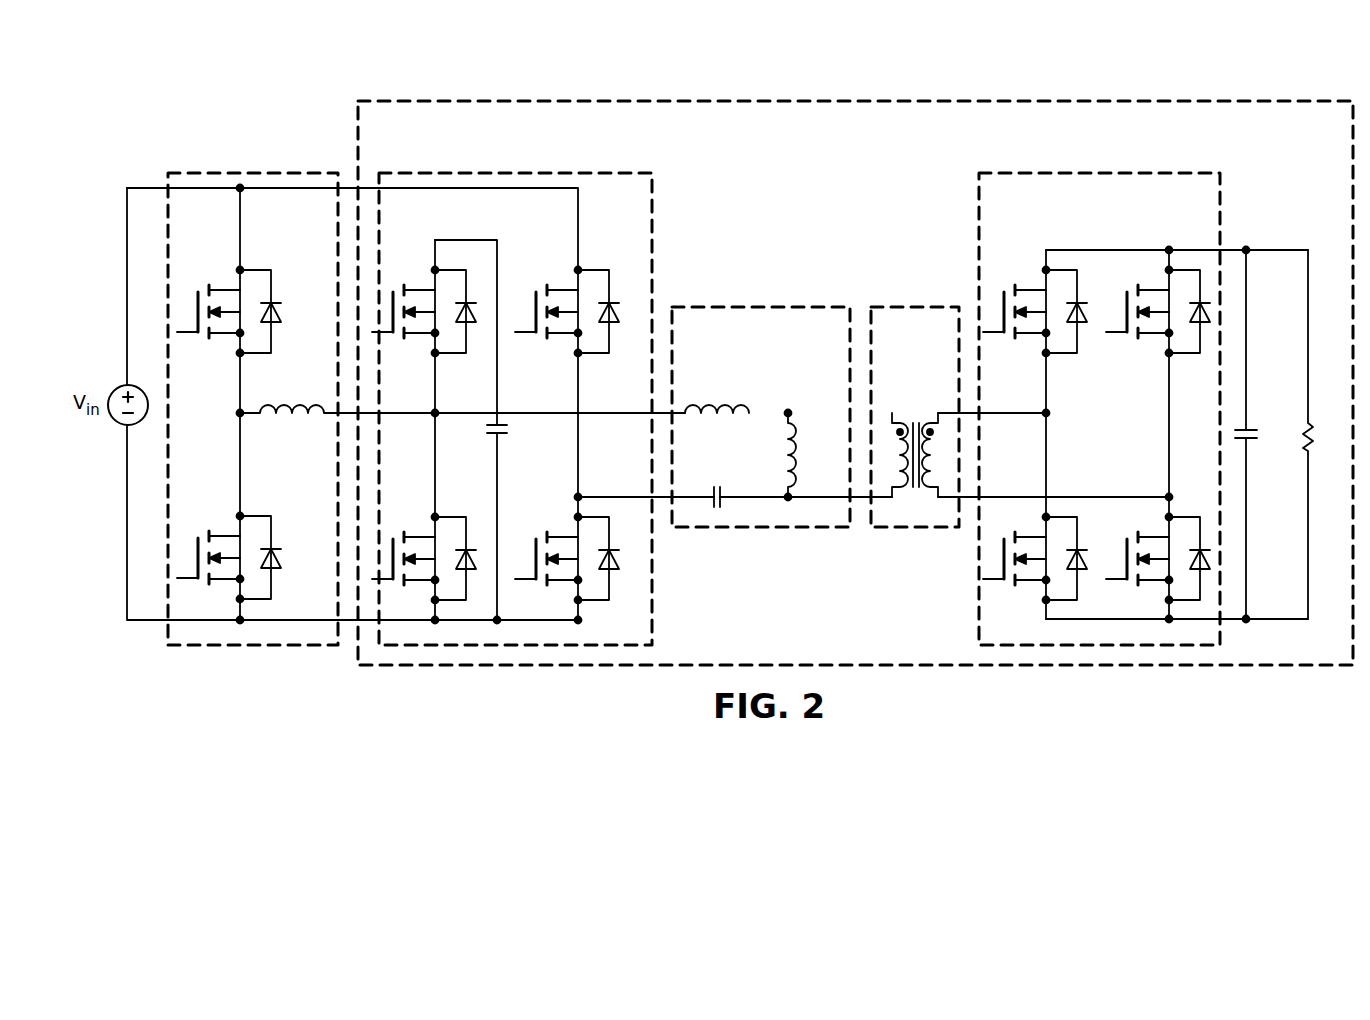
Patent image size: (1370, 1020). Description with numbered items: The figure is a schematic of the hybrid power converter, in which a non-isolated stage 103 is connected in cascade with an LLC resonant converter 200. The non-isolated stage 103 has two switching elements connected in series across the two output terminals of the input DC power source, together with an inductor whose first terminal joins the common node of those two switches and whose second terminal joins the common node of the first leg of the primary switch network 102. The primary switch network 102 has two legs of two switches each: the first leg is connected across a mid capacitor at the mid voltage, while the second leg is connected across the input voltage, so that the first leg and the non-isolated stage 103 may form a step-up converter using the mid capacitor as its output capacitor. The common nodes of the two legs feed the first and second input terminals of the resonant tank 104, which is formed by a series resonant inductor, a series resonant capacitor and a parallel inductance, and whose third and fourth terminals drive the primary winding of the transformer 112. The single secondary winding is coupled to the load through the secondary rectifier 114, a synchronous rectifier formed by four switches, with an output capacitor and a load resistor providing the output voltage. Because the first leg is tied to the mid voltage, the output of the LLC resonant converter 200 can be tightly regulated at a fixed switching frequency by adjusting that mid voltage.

The LLC resonant converter 200 is at (1101, 94).
The non-isolated stage 103 is at (203, 165).
The primary switch network 102 is at (453, 165).
The resonant tank 104 is at (722, 297).
The transformer 112 is at (930, 297).
The secondary rectifier 114 is at (1161, 163).